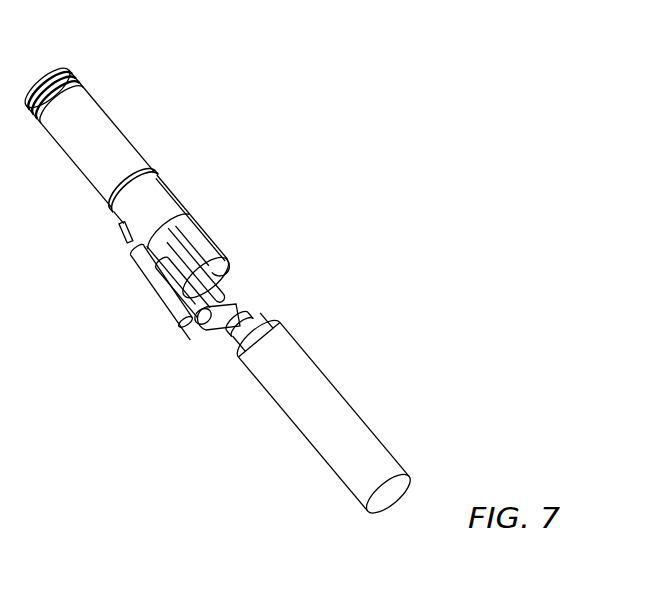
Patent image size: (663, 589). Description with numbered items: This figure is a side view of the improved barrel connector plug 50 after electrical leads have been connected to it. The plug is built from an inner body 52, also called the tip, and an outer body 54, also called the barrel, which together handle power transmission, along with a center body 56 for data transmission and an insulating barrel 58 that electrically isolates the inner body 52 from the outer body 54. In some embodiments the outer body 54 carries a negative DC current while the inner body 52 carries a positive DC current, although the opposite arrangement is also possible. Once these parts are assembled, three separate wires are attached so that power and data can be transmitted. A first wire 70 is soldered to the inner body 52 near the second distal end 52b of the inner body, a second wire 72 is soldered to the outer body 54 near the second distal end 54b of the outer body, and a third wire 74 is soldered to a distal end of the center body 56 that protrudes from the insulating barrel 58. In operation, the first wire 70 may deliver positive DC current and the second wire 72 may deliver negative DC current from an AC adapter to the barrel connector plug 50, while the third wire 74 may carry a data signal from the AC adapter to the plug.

The barrel connector plug 50 is at (287, 109).
The inner body 52 is at (170, 240).
The second distal end of the inner body 52b is at (183, 255).
The outer body 54 is at (120, 128).
The second distal end of the outer body 54b is at (130, 228).
The center body 56 is at (226, 292).
The insulating barrel 58 is at (69, 73).
The first wire 70 is at (173, 283).
The second wire 72 is at (140, 267).
The third wire 74 is at (262, 307).